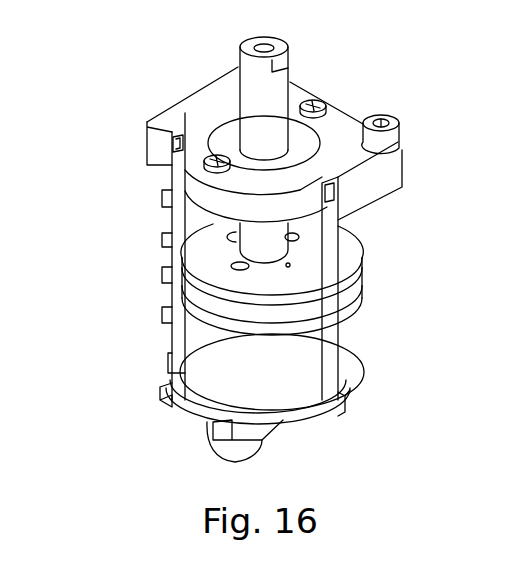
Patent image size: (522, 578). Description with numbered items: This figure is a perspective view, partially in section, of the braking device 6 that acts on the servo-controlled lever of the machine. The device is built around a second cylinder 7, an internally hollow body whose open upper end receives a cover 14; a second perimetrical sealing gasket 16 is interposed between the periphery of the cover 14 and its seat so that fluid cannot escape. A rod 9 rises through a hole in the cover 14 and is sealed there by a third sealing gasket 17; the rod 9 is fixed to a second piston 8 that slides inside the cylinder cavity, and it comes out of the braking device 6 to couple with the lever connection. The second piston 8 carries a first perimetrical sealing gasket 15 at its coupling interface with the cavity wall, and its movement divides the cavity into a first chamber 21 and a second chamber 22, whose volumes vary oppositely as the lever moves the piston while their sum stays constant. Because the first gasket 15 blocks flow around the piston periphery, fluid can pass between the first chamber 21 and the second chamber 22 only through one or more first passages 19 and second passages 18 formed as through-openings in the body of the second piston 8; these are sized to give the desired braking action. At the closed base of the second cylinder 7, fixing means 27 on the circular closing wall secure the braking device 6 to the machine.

The braking device 6 is at (70, 12).
The second cylinder 7 is at (173, 178).
The second piston 8 is at (193, 318).
The rod 9 is at (245, 68).
The cover 14 is at (183, 115).
The first perimetrical sealing gasket 15 is at (193, 290).
The second perimetrical sealing gasket 16 is at (175, 143).
The third sealing gasket 17 is at (233, 123).
The second passage 18 is at (232, 238).
The first passage 19 is at (295, 265).
The first chamber 21 is at (233, 372).
The second chamber 22 is at (193, 212).
The fixing means 27 is at (238, 443).